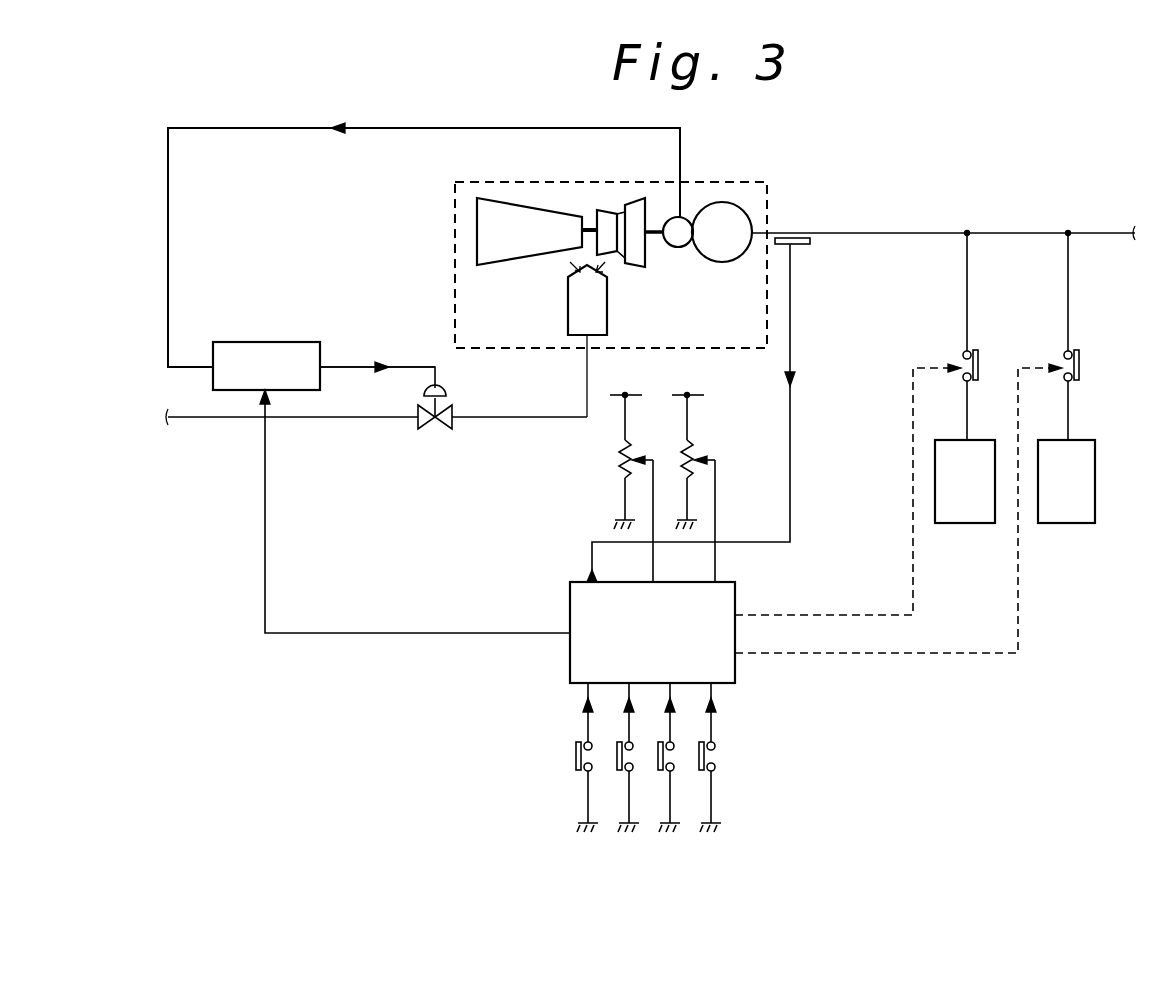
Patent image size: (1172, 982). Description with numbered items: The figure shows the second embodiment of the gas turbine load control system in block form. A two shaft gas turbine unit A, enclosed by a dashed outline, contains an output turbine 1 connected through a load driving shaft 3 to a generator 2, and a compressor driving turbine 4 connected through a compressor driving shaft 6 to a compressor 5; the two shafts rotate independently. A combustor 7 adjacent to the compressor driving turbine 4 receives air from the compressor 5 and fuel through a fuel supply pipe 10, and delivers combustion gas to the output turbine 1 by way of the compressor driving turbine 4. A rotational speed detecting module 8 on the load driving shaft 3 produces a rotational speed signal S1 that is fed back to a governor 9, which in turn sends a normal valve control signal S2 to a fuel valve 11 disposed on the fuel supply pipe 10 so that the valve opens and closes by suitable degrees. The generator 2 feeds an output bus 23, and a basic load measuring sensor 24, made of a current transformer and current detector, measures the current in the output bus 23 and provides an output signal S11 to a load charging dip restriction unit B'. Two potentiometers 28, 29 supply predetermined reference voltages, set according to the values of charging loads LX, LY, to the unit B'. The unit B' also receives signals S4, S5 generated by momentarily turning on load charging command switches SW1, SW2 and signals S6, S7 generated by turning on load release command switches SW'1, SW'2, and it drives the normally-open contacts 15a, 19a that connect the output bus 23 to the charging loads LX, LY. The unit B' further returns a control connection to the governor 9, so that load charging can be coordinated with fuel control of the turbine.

The output turbine 1 is at (633, 258).
The generator 2 is at (730, 262).
The load driving shaft 3 is at (655, 240).
The compressor driving turbine 4 is at (612, 215).
The compressor 5 is at (519, 240).
The compressor driving shaft 6 is at (596, 218).
The combustor 7 is at (596, 310).
The rotational speed detecting module 8 is at (681, 248).
The governor 9 is at (274, 377).
The fuel supply pipe 10 is at (506, 418).
The fuel valve 11 is at (440, 408).
The output bus 23 is at (903, 233).
The basic load measuring sensor 24 is at (814, 246).
The potentiometer 28 is at (626, 459).
The potentiometer 29 is at (694, 451).
The normally-open contact 15a is at (978, 354).
The normally-open contact 19a is at (1082, 354).
The two shaft gas turbine unit A is at (749, 182).
The load charging dip restriction unit B' is at (661, 523).
The rotational speed signal S1 is at (338, 130).
The normal valve control signal S2 is at (375, 365).
The output signal of basic load measuring sensor S11 is at (796, 365).
The load charging command signal S4 is at (584, 711).
The load charging command signal S5 is at (628, 722).
The load release command signal S6 is at (672, 717).
The load release command signal S7 is at (714, 718).
The load charging command switch SW1 is at (576, 769).
The load charging command switch SW2 is at (616, 772).
The load release command switch SW'1 is at (737, 757).
The load release command switch SW'2 is at (742, 760).
The charging load LX is at (965, 481).
The charging load LY is at (1066, 481).